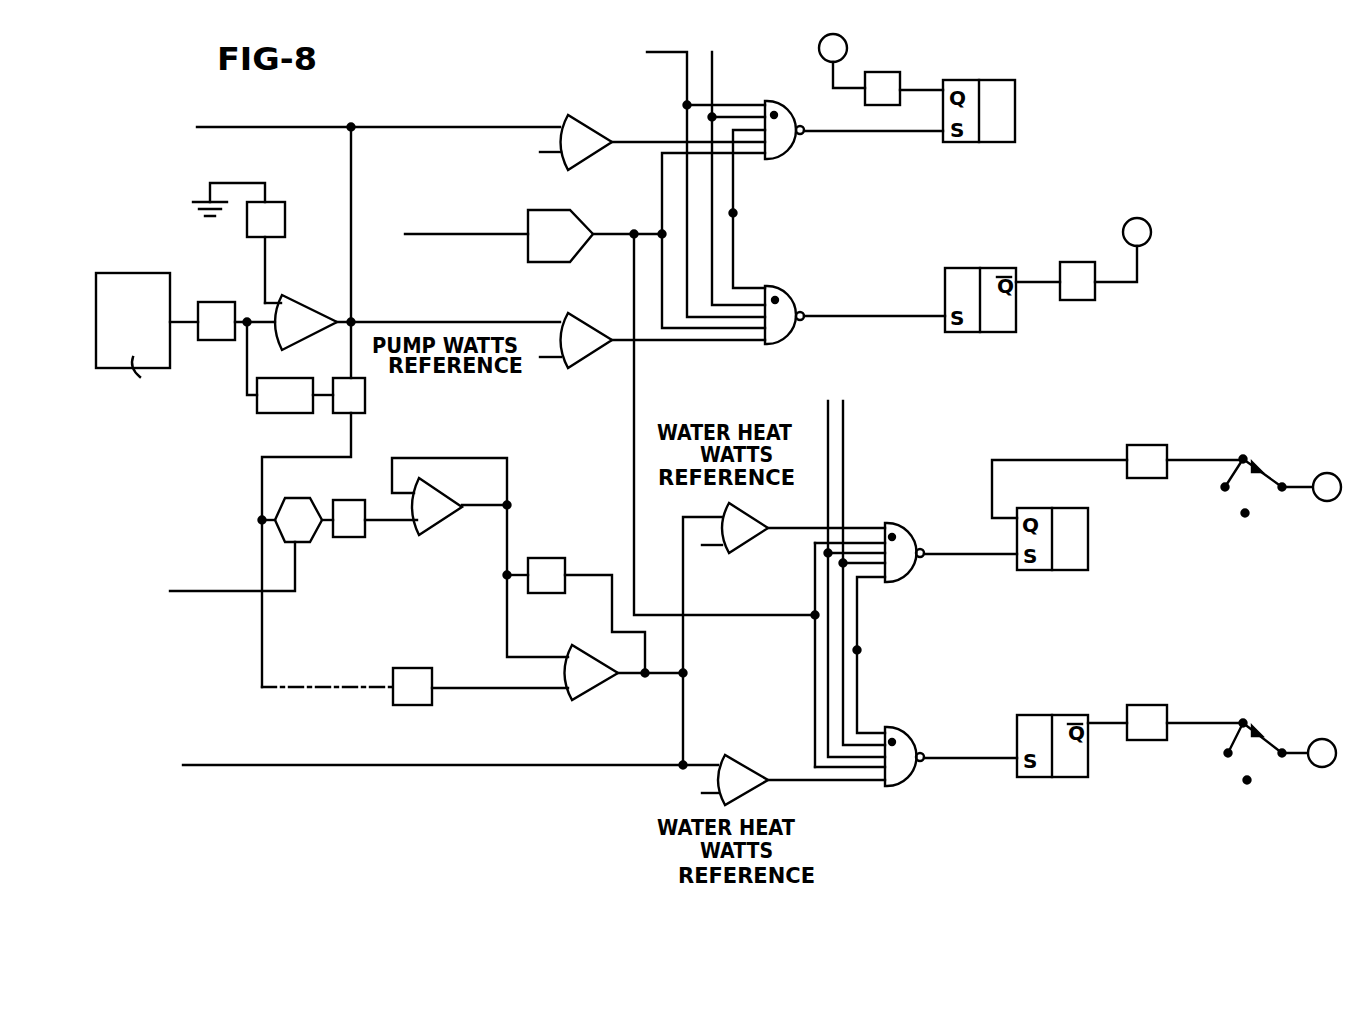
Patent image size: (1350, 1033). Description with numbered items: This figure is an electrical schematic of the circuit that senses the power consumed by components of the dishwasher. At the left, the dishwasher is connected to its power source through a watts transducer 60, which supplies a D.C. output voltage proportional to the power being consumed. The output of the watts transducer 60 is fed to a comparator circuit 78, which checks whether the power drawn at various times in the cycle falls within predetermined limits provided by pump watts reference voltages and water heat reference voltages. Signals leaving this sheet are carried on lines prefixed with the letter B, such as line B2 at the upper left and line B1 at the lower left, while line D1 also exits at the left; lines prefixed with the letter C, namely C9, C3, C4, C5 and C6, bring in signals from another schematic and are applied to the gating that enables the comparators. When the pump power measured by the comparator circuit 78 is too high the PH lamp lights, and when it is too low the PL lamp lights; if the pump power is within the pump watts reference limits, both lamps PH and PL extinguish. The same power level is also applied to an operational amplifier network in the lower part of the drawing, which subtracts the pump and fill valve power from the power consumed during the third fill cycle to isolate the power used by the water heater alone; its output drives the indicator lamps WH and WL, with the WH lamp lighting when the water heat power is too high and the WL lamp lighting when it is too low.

The watts transducer 60 is at (140, 282).
The comparator circuit 78 is at (451, 86).
The output signal line B2 is at (356, 128).
The output signal line B1 is at (430, 770).
The output signal line D1 is at (219, 572).
The input signal line C9 is at (512, 236).
The control signal line C3 is at (905, 650).
The control signal line C4 is at (712, 52).
The control signal line C5 is at (828, 401).
The control signal line C6 is at (733, 213).
The PH lamp PH is at (838, 45).
The PL lamp PL is at (1142, 221).
The WH lamp WH is at (1323, 474).
The WL lamp WL is at (1320, 739).